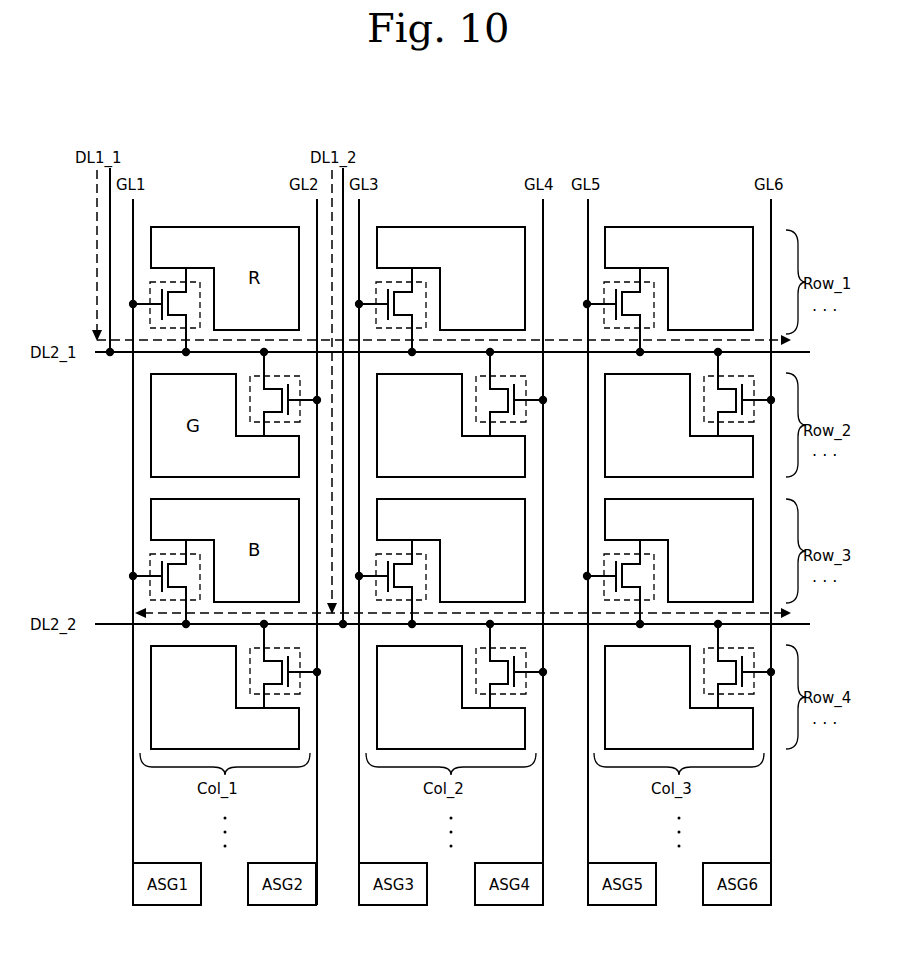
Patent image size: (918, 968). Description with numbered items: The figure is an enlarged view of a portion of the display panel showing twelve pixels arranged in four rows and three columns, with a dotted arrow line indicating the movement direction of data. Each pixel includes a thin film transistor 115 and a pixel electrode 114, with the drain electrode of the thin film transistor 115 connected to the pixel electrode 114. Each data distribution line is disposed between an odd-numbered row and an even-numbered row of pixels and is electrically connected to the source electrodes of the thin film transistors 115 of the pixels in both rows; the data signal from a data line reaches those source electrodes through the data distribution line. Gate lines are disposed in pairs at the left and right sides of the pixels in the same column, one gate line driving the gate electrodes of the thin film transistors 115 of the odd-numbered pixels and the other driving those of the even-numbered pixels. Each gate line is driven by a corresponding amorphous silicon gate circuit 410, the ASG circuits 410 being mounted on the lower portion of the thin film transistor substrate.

The pixel electrode 114 is at (233, 227).
The thin film transistor 115 is at (168, 282).
The amorphous silicon gate circuit 410 is at (171, 907).